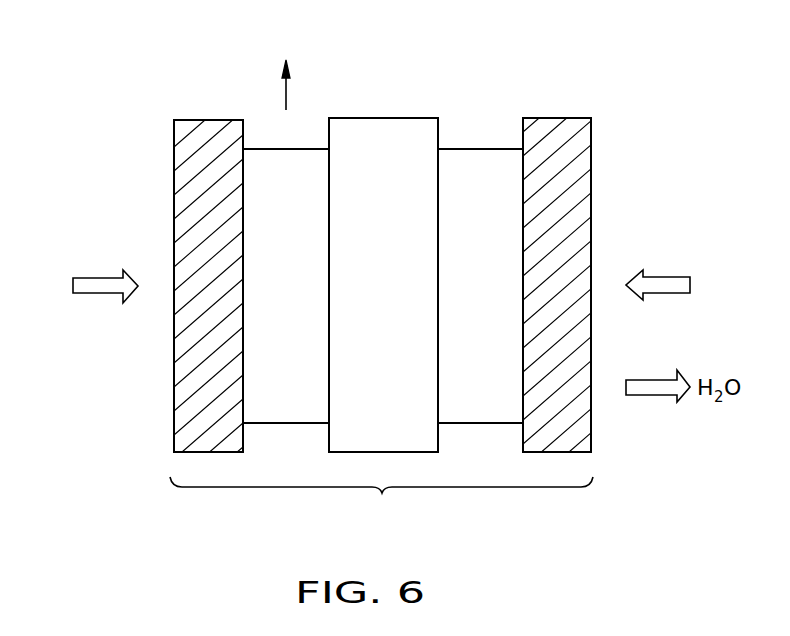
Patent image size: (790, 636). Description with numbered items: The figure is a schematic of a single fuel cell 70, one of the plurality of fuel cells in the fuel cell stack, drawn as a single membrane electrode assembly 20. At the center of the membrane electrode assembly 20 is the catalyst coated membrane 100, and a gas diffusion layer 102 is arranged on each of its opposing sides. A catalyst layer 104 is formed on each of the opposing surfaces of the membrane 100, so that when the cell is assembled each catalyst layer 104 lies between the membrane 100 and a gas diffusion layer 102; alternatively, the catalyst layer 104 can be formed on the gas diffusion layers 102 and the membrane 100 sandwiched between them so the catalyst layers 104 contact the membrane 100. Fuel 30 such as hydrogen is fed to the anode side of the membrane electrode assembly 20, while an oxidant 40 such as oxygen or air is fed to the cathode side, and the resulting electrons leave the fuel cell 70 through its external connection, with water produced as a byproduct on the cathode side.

The membrane electrode assembly 20 is at (381, 500).
The fuel 30 is at (86, 286).
The oxidant 40 is at (677, 285).
The fuel cell 70 is at (181, 88).
The catalyst coated membrane 100 is at (400, 300).
The gas diffusion layer 102 is at (205, 373).
The catalyst layer 104 is at (273, 185).